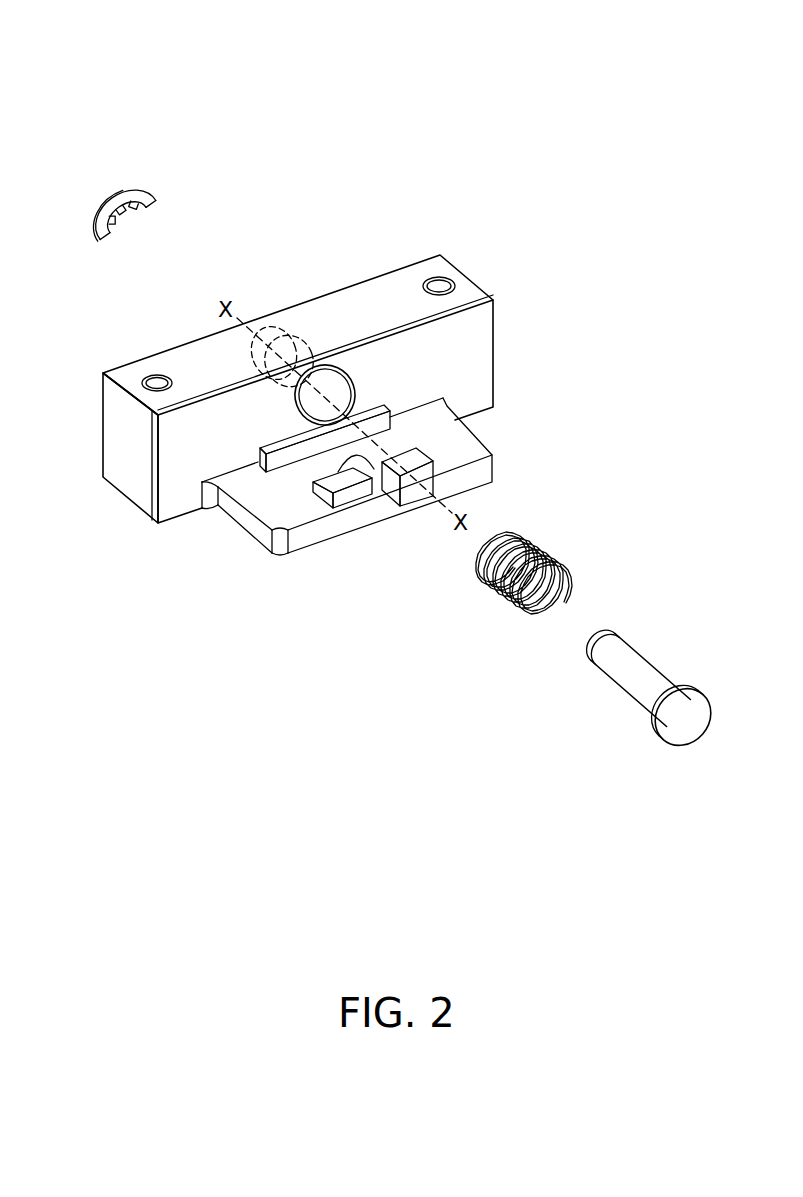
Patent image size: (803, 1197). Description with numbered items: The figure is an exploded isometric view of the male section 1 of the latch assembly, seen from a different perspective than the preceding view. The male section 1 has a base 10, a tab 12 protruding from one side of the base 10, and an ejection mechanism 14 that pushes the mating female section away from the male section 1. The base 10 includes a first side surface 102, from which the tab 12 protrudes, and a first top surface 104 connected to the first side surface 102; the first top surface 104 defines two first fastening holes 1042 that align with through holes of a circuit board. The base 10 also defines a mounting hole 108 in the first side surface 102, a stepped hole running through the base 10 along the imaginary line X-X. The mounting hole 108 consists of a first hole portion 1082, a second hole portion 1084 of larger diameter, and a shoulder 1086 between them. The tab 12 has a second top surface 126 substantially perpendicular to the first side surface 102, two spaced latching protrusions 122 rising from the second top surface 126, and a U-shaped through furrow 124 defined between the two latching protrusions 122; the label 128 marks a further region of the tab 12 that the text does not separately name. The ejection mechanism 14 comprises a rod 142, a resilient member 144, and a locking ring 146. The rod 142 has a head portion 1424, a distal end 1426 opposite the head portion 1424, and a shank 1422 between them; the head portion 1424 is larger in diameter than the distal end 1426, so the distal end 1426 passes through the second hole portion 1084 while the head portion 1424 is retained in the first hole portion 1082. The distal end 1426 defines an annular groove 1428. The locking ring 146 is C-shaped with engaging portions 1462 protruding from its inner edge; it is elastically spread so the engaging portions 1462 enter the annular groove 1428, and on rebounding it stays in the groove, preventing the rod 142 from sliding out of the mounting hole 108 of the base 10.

The male section 1 is at (600, 64).
The base 10 is at (322, 373).
The first side surface 102 is at (475, 368).
The first top surface 104 is at (443, 302).
The first fastening hole 1042 is at (158, 378).
The mounting hole 108 is at (292, 314).
The first hole portion 1082 is at (272, 333).
The second hole portion 1084 is at (330, 358).
The shoulder 1086 is at (318, 335).
The tab 12 is at (342, 496).
The latching protrusion 122 is at (343, 484).
The U-shaped through furrow 124 is at (362, 470).
The second top surface 126 is at (243, 487).
The second plate portion 128 is at (470, 452).
The ejection mechanism 14 is at (333, 93).
The rod 142 is at (611, 626).
The shank 1422 is at (637, 690).
The head portion 1424 is at (687, 723).
The distal end 1426 is at (597, 647).
The annular groove 1428 is at (593, 660).
The resilient member 144 is at (543, 550).
The locking ring 146 is at (218, 188).
The engaging portion 1462 is at (112, 228).